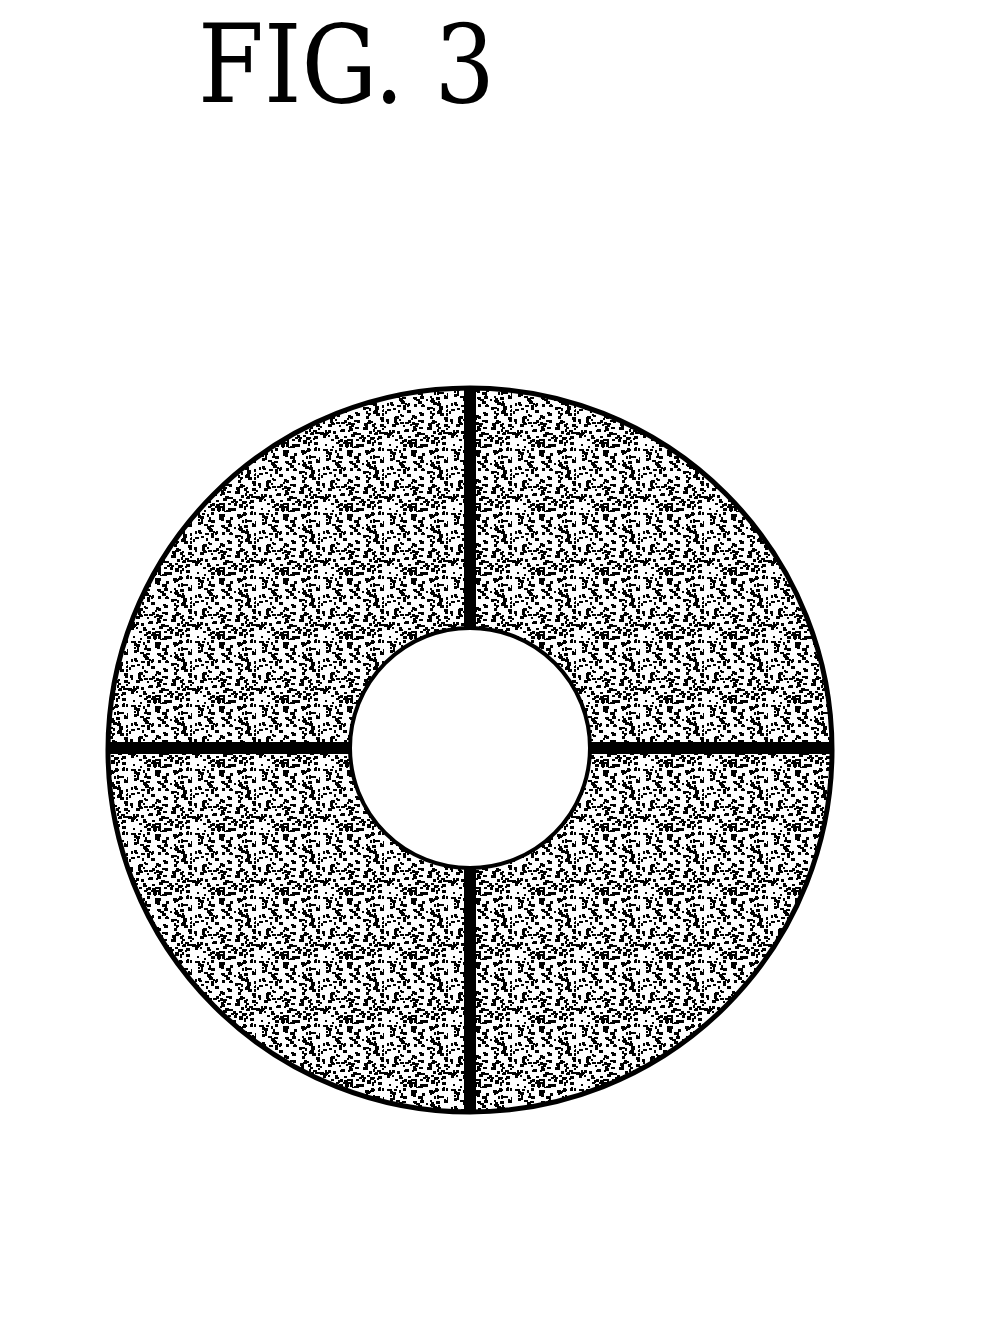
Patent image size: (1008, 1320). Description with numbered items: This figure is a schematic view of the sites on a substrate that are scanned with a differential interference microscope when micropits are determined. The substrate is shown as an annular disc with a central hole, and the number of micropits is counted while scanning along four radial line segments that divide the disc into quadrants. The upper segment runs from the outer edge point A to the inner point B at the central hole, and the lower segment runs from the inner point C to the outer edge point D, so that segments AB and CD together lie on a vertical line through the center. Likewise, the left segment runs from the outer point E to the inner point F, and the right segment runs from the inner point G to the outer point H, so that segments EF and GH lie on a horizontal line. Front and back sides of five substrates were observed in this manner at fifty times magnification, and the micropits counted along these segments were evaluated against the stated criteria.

The line segment end point A is at (507, 449).
The line segment end point B is at (507, 597).
The line segment end point C is at (506, 898).
The line segment end point D is at (508, 1067).
The line segment end point E is at (148, 726).
The line segment end point F is at (315, 723).
The line segment end point G is at (625, 721).
The line segment end point H is at (784, 726).